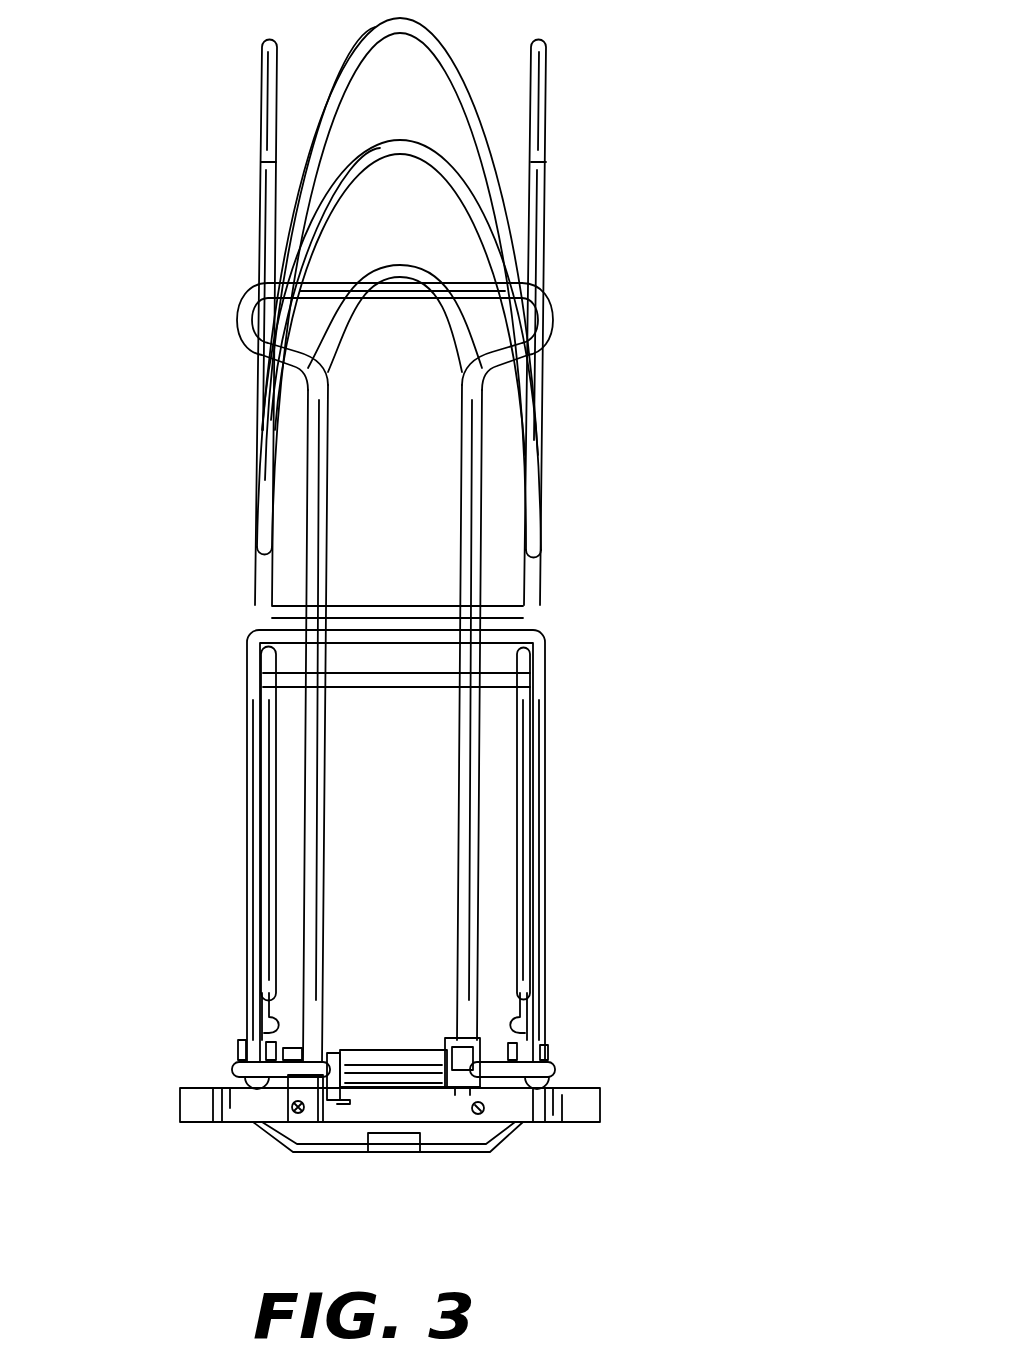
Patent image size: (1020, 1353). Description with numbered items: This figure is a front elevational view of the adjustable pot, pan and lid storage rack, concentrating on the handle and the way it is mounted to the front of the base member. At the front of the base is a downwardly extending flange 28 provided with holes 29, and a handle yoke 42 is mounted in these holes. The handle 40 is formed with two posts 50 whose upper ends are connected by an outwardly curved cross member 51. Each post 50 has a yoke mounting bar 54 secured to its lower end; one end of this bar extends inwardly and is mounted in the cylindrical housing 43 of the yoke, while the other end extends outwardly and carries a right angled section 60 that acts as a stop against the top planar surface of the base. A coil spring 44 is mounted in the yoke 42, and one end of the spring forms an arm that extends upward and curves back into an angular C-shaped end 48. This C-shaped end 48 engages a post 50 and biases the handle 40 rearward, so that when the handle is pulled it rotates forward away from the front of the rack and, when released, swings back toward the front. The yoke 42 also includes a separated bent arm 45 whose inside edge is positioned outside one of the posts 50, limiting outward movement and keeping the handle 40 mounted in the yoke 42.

The downwardly extending flange 28 is at (585, 1112).
The holes 29 is at (487, 1113).
The handle 40 is at (454, 354).
The handle yoke 42 is at (460, 1090).
The cylindrical housing 43 is at (392, 1060).
The coil spring 44 is at (290, 1120).
The bent arm 45 is at (297, 1080).
The C-shaped end 48 is at (480, 1043).
The post 50 is at (465, 742).
The cross member 51 is at (545, 350).
The yoke mounting bar 54 is at (473, 1067).
The right angled section 60 is at (240, 1063).